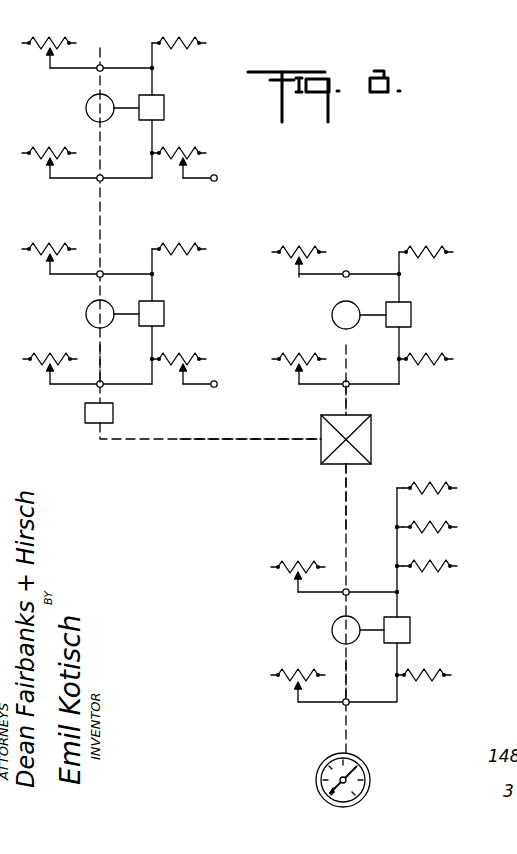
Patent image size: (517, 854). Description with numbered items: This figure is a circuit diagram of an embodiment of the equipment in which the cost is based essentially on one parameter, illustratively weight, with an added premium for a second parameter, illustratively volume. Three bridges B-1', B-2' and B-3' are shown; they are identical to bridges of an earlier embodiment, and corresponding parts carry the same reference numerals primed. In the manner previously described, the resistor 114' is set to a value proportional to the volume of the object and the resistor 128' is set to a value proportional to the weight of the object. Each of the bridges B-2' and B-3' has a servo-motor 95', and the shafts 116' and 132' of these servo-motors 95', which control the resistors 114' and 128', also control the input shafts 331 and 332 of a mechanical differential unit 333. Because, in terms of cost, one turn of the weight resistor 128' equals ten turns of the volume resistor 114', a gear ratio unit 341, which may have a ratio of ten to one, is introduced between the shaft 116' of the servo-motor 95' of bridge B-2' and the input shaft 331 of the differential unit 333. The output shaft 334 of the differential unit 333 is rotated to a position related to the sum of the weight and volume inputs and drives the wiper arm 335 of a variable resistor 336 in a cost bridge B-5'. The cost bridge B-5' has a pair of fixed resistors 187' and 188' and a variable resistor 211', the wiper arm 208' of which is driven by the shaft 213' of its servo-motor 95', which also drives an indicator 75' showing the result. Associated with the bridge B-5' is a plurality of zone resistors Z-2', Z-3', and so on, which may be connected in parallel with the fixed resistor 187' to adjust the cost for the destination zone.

The bridge B-1' is at (120, 109).
The bridge B-2' is at (119, 315).
The bridge B-3' is at (367, 316).
The cost bridge B-5' is at (381, 596).
The servo-motor 95' is at (207, 463).
The resistor 114' is at (41, 355).
The shaft 116' is at (122, 360).
The resistor 128' is at (290, 355).
The shaft 132' is at (369, 360).
The gear ratio unit 341 is at (85, 413).
The input shaft 331 is at (200, 441).
The input shaft 332 is at (346, 397).
The mechanical differential unit 333 is at (371, 438).
The output shaft 334 is at (346, 500).
The wiper arm 335 is at (294, 583).
The variable resistor 336 is at (297, 562).
The zone resistor Z-3' is at (443, 476).
The zone resistor Z-2' is at (444, 515).
The fixed resistor 187' is at (450, 555).
The fixed resistor 188' is at (436, 689).
The variable resistor 211' is at (287, 663).
The shaft 213' is at (366, 675).
The wiper arm 208' is at (265, 697).
The indicator 75' is at (358, 772).